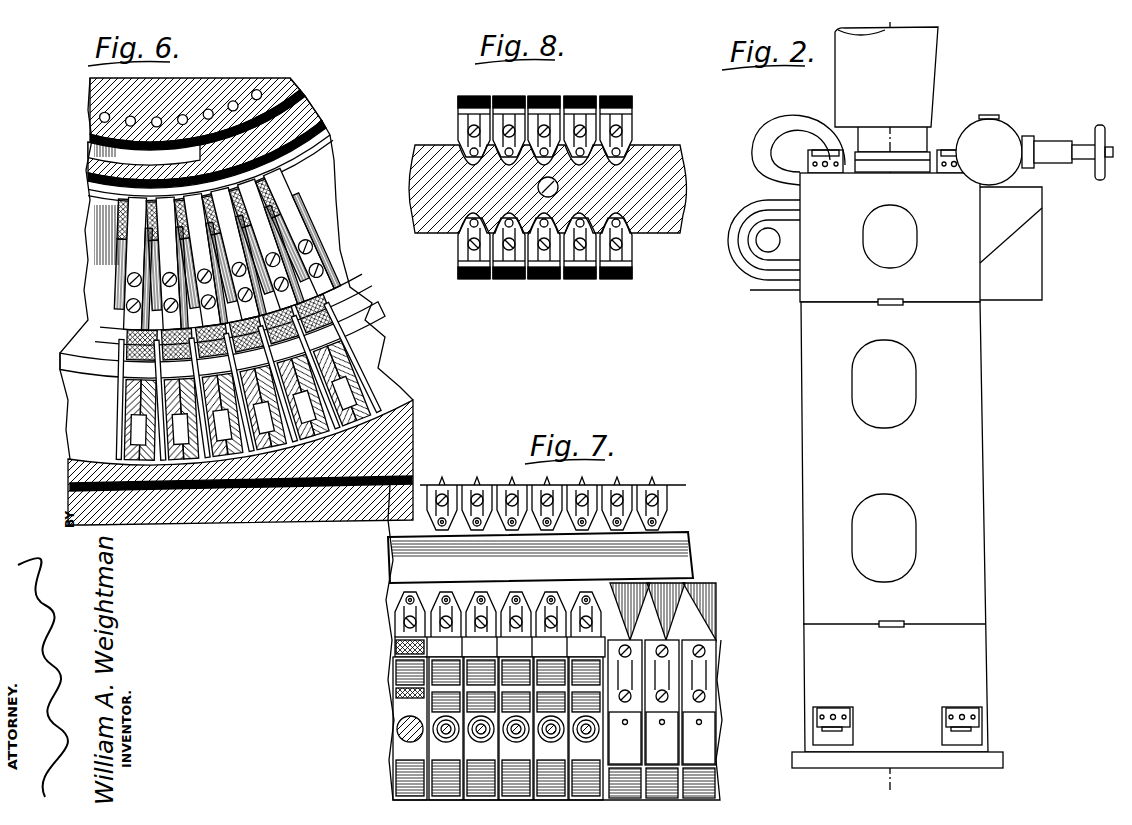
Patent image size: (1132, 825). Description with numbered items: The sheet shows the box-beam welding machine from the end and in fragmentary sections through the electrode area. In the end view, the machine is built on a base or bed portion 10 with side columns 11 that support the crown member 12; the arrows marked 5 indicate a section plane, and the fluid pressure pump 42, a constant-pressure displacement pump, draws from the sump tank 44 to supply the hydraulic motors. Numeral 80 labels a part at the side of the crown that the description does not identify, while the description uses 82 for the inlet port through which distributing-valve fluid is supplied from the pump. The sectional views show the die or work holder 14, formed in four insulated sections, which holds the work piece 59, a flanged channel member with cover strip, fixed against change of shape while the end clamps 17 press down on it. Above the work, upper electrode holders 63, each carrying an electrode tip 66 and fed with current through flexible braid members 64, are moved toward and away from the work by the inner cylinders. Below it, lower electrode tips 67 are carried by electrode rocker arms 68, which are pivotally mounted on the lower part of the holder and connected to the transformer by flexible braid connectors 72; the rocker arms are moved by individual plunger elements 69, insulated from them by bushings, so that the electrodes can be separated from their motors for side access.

In FIG. 2, the section line 5- 5 is at (869, 15).
In FIG. 2, the base or bed portion 10 is at (982, 667).
In FIG. 2, the side columns 11 is at (984, 490).
In FIG. 2, the crown member 12 is at (808, 186).
In FIG. 6, the die or work holder 14 is at (398, 434).
In FIG. 6, the end clamps 17 is at (203, 204).
In FIG. 2, the fluid pressure pump 42 is at (1012, 130).
In FIG. 2, the sump tank 44 is at (1036, 253).
In FIG. 6, the work piece 59 is at (62, 377).
In FIG. 7, the work piece 59 is at (400, 562).
In FIG. 6, the upper electrode holders 63 is at (135, 330).
In FIG. 6, the flexible braid members 64 is at (165, 247).
In FIG. 8, the flexible braid members 64 is at (605, 97).
In FIG. 8, the electrode tip 66 is at (625, 148).
In FIG. 7, the lower electrode tips 67 is at (640, 517).
In FIG. 6, the electrode rocker arms 68 is at (355, 350).
In FIG. 7, the electrode rocker arms 68 is at (400, 633).
In FIG. 6, the plunger elements 69 is at (229, 377).
In FIG. 7, the plunger elements 69 is at (395, 700).
In FIG. 7, the flexible braid connectors 72 is at (445, 776).
In FIG. 2, the swivel eye 80 is at (753, 283).
In FIG. 2, the inlet port 82 is at (780, 116).